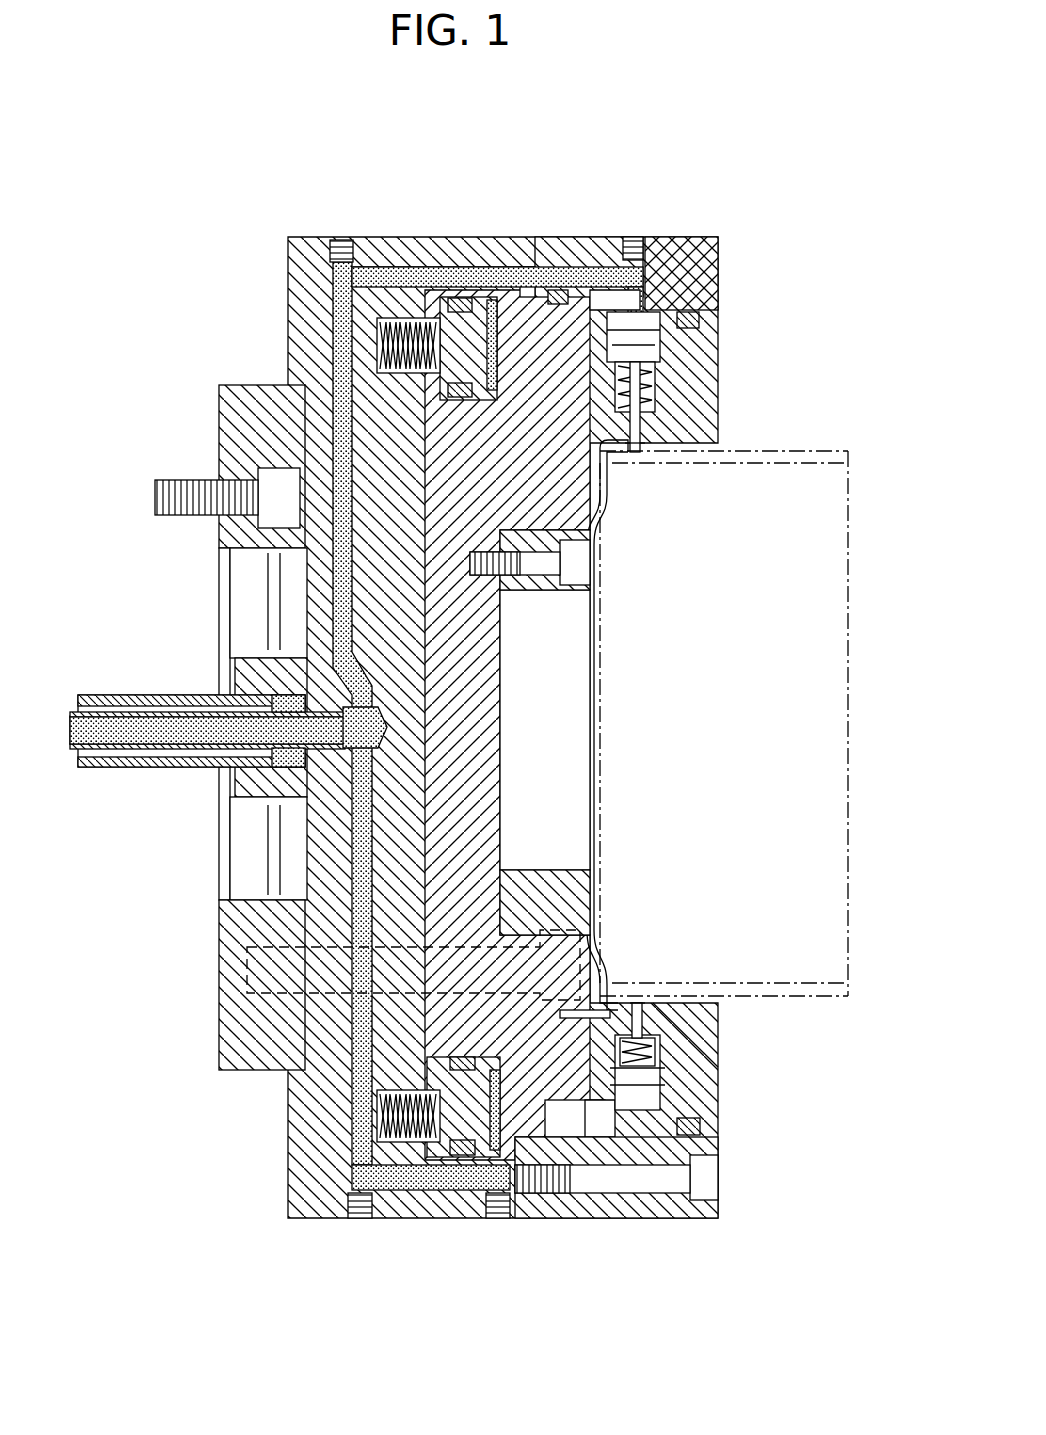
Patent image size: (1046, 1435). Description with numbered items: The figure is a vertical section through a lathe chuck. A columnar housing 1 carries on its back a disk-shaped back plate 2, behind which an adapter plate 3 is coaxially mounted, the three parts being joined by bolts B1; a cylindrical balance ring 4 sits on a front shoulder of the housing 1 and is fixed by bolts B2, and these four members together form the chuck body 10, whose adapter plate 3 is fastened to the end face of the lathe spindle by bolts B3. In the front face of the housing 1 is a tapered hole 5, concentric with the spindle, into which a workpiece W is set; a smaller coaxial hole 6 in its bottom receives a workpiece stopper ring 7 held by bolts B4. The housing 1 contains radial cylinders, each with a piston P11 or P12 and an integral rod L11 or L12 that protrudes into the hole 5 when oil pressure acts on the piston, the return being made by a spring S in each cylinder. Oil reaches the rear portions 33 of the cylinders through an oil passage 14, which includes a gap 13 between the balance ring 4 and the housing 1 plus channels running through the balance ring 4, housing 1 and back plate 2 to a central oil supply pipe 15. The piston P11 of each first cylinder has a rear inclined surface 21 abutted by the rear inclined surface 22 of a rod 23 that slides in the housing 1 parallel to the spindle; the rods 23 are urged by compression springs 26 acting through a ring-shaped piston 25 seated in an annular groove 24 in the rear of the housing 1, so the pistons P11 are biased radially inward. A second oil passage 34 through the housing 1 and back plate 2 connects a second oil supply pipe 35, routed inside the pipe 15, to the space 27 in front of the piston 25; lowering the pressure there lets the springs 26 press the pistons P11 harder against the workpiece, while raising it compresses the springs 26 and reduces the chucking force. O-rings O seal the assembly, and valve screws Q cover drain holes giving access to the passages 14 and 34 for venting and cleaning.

The housing 1 is at (495, 262).
The back plate 2 is at (392, 262).
The adapter plate 3 is at (235, 388).
The balance ring 4 is at (593, 262).
The hole 5 is at (665, 450).
The hole 6 is at (590, 905).
The workpiece stopper ring 7 is at (570, 880).
The chuck body 10 is at (612, 237).
The gap 13 is at (600, 300).
The oil passage 14 is at (432, 280).
The oil supply pipe 15 is at (95, 695).
The rear inclined surface 21 is at (660, 1180).
The rear inclined surface 22 is at (655, 1110).
The rod 23 is at (580, 1115).
The annular groove 24 is at (445, 375).
The ring-shaped piston 25 is at (490, 300).
The compression spring 26 is at (385, 330).
The space 27 is at (527, 290).
The rear portion of cylinder 33 is at (660, 340).
The oil passage 34 is at (98, 767).
The second oil supply pipe 35 is at (178, 757).
The valve screw Q is at (340, 242).
The O-ring O is at (683, 322).
The spring S is at (655, 395).
The piston P12 is at (660, 362).
The piston P11 is at (660, 1075).
The rod L12 is at (634, 455).
The rod L11 is at (640, 1003).
The workpiece W is at (830, 451).
The bolt B1 is at (240, 975).
The bolt B2 is at (640, 1180).
The bolt B3 is at (205, 495).
The bolt B4 is at (575, 562).